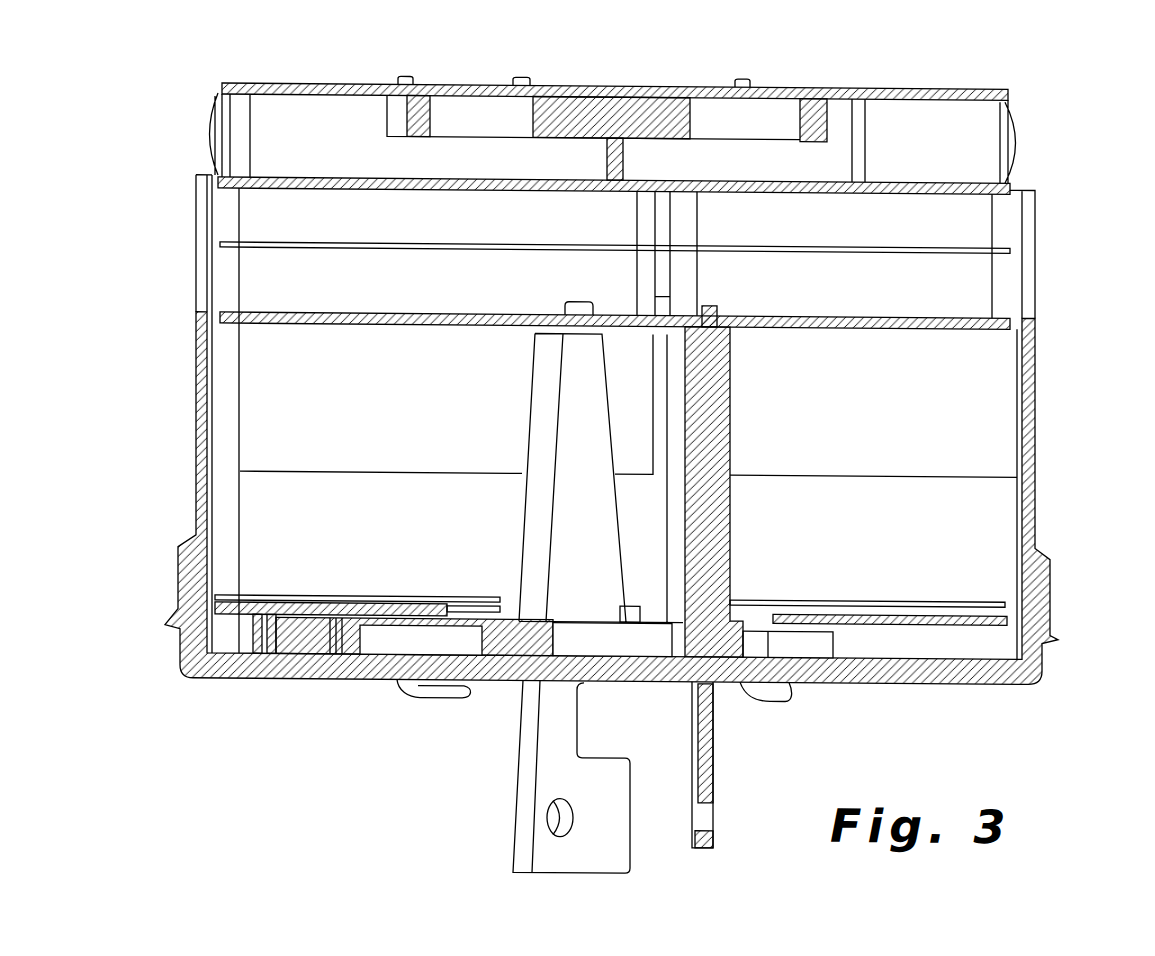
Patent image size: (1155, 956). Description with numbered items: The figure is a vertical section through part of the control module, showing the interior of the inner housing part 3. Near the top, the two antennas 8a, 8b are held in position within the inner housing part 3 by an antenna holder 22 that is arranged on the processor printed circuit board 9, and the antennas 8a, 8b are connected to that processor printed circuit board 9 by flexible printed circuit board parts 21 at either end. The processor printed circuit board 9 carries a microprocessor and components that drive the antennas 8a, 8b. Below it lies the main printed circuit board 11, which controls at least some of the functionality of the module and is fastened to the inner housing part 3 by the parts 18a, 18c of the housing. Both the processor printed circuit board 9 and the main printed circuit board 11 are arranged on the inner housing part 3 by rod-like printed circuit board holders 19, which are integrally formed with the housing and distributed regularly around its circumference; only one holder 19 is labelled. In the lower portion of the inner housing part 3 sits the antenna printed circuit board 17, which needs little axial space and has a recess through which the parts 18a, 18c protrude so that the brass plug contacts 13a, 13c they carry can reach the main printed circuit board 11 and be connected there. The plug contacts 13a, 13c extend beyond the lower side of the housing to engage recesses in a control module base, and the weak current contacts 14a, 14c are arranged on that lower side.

The inner housing part 3 is at (1040, 586).
The antenna 8a is at (425, 89).
The antenna 8b is at (912, 88).
The processor printed circuit board 9 is at (968, 196).
The main printed circuit board 11 is at (296, 328).
The plug contact 13a is at (597, 785).
The plug contact 13c is at (712, 759).
The weak current contact 14a is at (445, 701).
The weak current contact 14c is at (783, 693).
The antenna printed circuit board 17 is at (950, 619).
The part of the lower housing part 18a is at (575, 430).
The part of the lower housing part 18c is at (712, 408).
The rod-like printed circuit board holder 19 is at (1030, 280).
The flexible printed circuit board part 21 is at (208, 114).
The antenna holder 22 is at (640, 118).